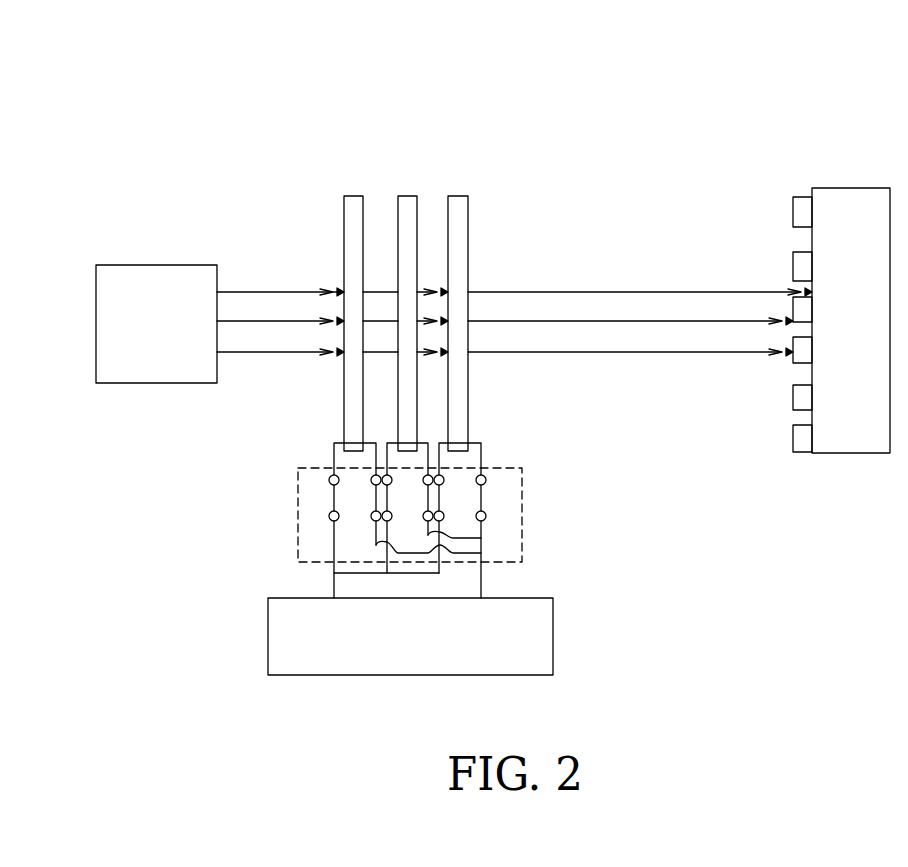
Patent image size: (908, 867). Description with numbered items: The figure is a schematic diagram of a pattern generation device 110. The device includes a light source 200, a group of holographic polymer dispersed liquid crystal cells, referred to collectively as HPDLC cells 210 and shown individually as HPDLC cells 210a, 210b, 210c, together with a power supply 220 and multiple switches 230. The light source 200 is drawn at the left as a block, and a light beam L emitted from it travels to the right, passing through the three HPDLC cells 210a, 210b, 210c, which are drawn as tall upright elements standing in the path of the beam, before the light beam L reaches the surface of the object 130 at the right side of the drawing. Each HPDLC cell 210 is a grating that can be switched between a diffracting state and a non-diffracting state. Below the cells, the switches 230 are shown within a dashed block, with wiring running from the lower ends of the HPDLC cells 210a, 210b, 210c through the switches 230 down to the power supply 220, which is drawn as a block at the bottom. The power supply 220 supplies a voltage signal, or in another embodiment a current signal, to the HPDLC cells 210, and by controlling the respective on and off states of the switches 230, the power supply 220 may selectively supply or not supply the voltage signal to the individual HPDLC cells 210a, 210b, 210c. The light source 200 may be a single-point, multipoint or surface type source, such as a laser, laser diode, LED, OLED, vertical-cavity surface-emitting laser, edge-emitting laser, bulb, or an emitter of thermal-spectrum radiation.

The pattern generation device 110 is at (60, 94).
The light source 200 is at (156, 265).
The light beam L is at (514, 304).
The HPDLC cells 210 is at (520, 82).
The HPDLC cell 210a is at (352, 196).
The HPDLC cell 210b is at (407, 196).
The HPDLC cell 210c is at (458, 196).
The object 130 is at (852, 188).
The switches 230 is at (522, 519).
The power supply 220 is at (553, 635).